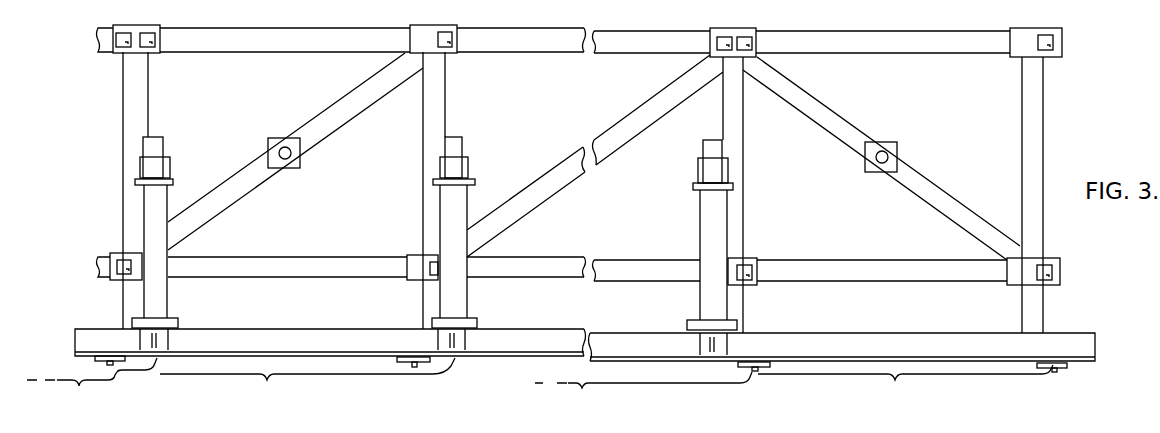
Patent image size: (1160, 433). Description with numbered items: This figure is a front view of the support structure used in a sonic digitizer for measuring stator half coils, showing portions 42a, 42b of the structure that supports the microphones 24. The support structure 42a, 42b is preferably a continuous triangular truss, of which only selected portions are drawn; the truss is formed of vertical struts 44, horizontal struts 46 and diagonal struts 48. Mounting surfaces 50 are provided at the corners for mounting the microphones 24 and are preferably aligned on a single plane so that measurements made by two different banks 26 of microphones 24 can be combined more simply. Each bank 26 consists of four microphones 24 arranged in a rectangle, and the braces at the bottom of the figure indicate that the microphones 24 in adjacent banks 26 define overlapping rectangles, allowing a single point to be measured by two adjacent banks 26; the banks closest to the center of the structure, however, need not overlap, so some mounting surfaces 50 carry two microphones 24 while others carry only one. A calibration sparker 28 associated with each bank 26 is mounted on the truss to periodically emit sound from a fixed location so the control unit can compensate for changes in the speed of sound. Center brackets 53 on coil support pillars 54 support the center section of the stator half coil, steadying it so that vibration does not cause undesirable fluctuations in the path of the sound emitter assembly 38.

The microphones 24 is at (122, 48).
The bank 26 is at (540, 386).
The calibration sparker 28 is at (286, 160).
The sound emitter assembly 38 is at (486, 432).
The support structure portion 42a is at (852, 403).
The support structure portion 42b is at (377, 401).
The vertical struts 44 is at (423, 118).
The horizontal struts 46 is at (309, 46).
The diagonal struts 48 is at (251, 186).
The mounting surfaces 50 is at (137, 53).
The center brackets 53 is at (165, 152).
The coil support pillars 54 is at (168, 297).